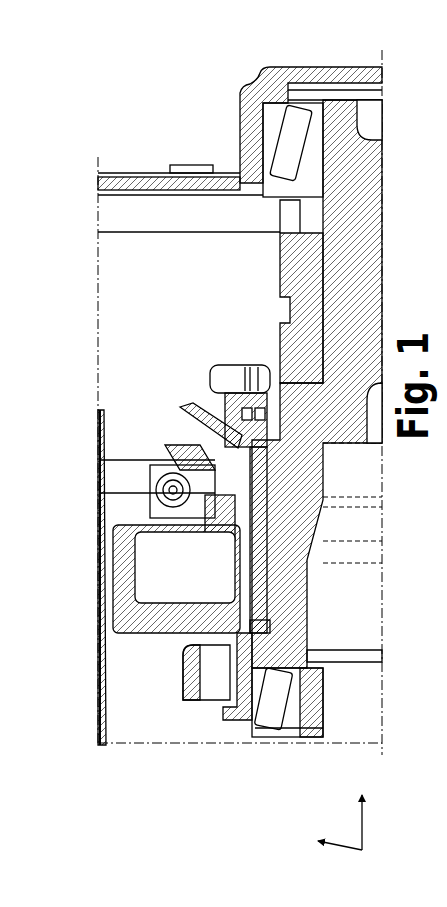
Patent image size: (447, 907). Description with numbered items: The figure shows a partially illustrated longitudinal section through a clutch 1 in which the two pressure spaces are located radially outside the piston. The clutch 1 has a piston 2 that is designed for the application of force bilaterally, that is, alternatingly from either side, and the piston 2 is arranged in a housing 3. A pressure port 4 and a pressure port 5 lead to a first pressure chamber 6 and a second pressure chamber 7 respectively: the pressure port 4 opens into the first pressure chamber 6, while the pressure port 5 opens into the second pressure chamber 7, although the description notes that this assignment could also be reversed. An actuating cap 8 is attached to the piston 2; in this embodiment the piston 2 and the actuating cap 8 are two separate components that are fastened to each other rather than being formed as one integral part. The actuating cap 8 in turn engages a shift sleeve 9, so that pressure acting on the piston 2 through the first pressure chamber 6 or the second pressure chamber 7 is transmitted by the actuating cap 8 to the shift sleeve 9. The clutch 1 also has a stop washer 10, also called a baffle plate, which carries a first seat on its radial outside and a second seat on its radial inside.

The clutch 1 is at (66, 250).
The piston 2 is at (165, 460).
The housing 3 is at (230, 428).
The pressure port 4 is at (272, 367).
The pressure port 5 is at (183, 437).
The first pressure chamber 6 is at (228, 363).
The second pressure chamber 7 is at (217, 420).
The actuating cap 8 is at (215, 520).
The shift sleeve 9 is at (215, 575).
The stop washer 10 is at (212, 503).